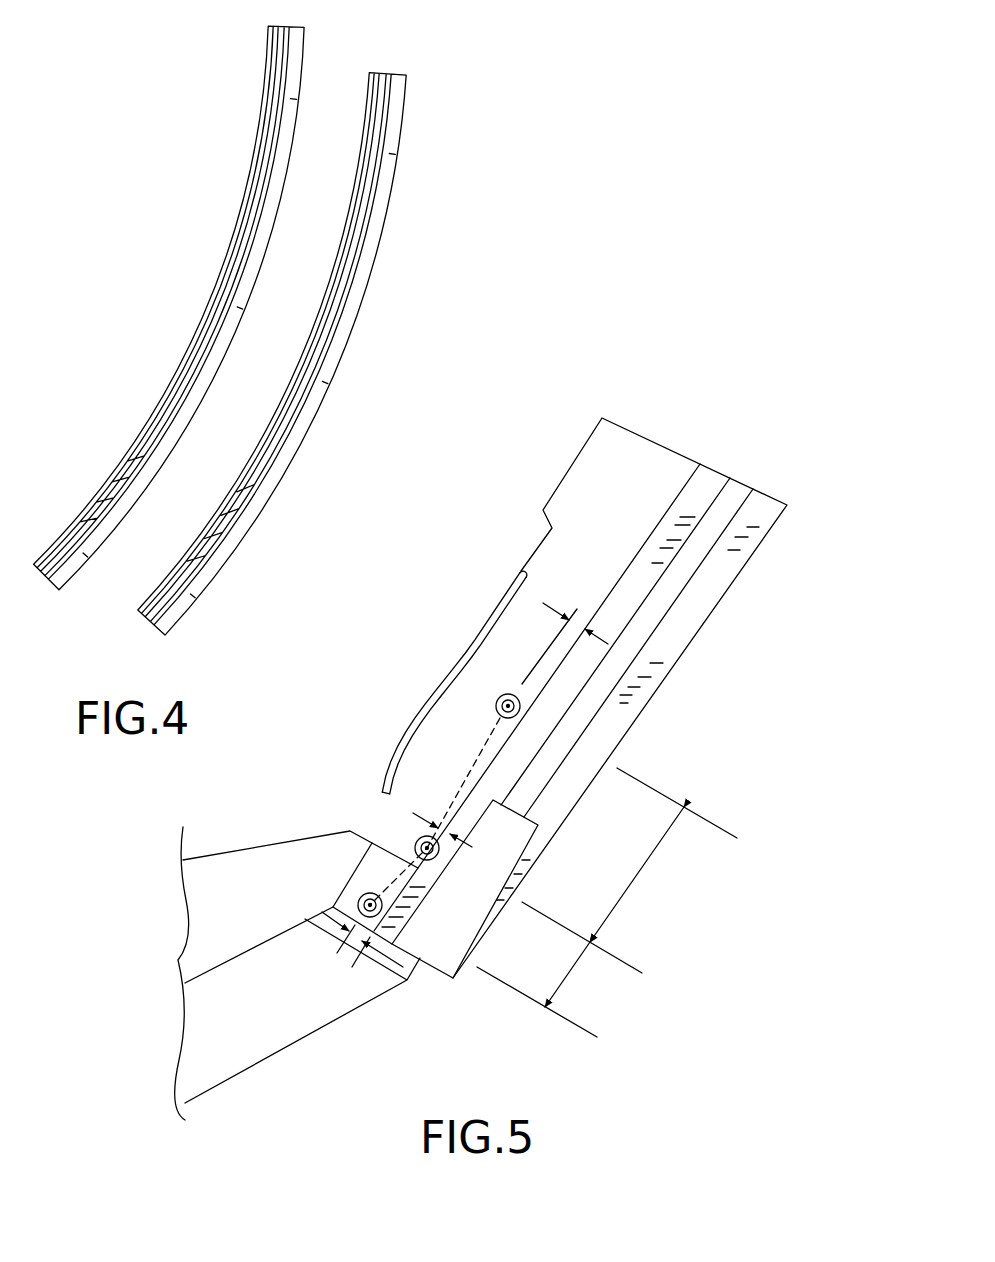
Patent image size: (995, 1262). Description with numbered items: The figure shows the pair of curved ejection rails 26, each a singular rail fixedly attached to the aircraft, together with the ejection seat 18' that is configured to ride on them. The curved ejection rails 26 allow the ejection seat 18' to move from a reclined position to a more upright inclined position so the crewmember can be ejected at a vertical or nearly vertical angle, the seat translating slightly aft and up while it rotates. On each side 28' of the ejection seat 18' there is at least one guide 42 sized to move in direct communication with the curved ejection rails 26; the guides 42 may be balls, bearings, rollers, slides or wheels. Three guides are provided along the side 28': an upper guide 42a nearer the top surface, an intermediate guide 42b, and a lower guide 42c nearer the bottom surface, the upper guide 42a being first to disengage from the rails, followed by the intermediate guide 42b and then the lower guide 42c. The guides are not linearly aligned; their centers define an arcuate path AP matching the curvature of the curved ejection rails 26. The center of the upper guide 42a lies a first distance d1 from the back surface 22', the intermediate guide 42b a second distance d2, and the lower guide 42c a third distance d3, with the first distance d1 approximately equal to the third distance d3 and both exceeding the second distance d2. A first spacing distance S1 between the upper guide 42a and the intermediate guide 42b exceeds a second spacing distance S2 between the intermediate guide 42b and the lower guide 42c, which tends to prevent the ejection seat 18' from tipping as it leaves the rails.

In FIG. 4, the curved ejection rails 26 is at (232, 243).
In FIG. 5, the side 28' is at (580, 698).
In FIG. 5, the back surface 22' is at (630, 689).
In FIG. 5, the guide 42 is at (423, 655).
In FIG. 5, the upper guide 42a is at (506, 693).
In FIG. 5, the intermediate guide 42b is at (423, 834).
In FIG. 5, the lower guide 42c is at (371, 892).
In FIG. 5, the arcuate path AP is at (490, 745).
In FIG. 5, the first distance d1 is at (545, 603).
In FIG. 5, the second distance d2 is at (417, 810).
In FIG. 5, the third distance d3 is at (383, 963).
In FIG. 5, the first spacing distance S1 is at (637, 873).
In FIG. 5, the second spacing distance S2 is at (563, 973).
In FIG. 5, the ejection seat 18' is at (297, 973).